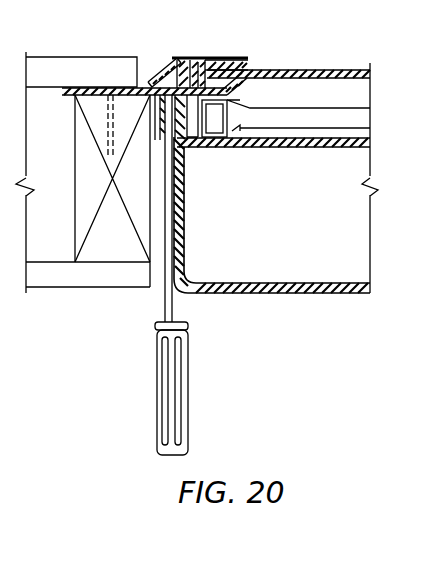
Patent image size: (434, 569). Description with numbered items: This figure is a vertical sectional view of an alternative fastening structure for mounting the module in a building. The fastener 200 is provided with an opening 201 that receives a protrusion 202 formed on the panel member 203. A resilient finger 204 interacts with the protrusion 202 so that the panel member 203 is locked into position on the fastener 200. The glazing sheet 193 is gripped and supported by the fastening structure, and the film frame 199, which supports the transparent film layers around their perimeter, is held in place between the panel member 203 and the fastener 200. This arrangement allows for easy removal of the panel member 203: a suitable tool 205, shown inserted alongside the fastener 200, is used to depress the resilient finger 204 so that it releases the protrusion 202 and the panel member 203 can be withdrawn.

The glazing sheet 193 is at (307, 67).
The film frame 199 is at (236, 120).
The fastener 200 is at (245, 98).
The opening 201 is at (170, 70).
The protrusion 202 is at (182, 150).
The panel member 203 is at (186, 246).
The resilient finger 204 is at (163, 134).
The tool 205 is at (188, 380).